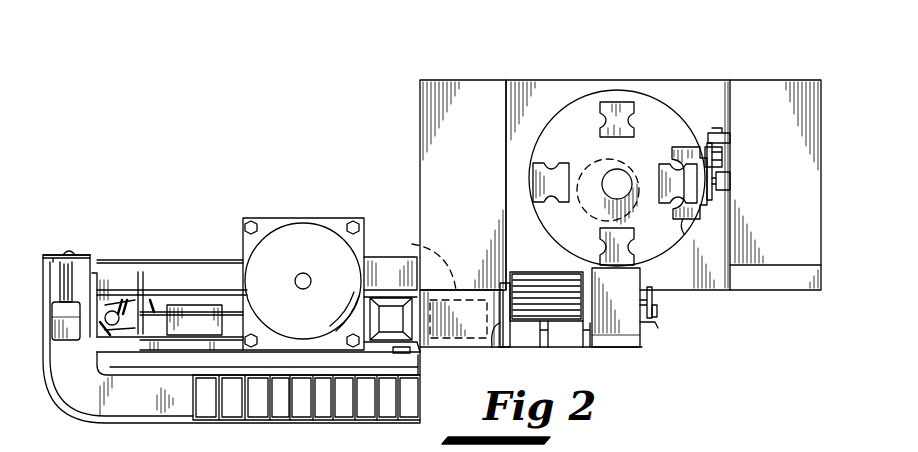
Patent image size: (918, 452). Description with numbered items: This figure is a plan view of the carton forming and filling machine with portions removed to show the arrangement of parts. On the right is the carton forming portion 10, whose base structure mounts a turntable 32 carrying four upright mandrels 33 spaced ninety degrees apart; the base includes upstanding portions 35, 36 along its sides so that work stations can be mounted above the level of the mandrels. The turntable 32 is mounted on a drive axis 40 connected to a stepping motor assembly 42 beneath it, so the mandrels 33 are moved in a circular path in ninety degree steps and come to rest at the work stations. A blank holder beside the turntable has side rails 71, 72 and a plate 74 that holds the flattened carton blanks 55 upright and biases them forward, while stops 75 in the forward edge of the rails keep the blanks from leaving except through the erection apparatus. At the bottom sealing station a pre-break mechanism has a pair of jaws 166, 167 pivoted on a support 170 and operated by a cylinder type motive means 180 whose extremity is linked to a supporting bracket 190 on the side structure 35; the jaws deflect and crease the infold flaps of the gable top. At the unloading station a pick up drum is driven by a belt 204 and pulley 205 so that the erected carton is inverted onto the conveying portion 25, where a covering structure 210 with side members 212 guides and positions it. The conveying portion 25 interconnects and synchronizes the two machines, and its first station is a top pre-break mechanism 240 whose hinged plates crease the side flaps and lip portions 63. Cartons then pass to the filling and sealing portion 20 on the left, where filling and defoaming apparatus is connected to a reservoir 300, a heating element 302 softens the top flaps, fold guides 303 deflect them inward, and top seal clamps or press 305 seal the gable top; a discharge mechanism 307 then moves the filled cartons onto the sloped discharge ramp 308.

The carton forming portion 10 is at (606, 72).
The carton filling and sealing portion 20 is at (165, 181).
The conveying portion 25 is at (464, 347).
The turntable 32 is at (660, 102).
The mandrels 33 is at (628, 102).
The upstanding portion 35 is at (781, 91).
The upstanding portion 36 is at (472, 95).
The drive axis 40 is at (631, 165).
The stepping motor assembly 42 is at (608, 198).
The carton blank 55 is at (543, 272).
The lip portions 63 is at (270, 451).
The side rail 71 is at (586, 347).
The side rail 72 is at (494, 340).
The plate 74 is at (546, 347).
The stops 75 is at (502, 276).
The jaw 166 is at (672, 150).
The jaw 167 is at (684, 230).
The support 170 is at (727, 180).
The motive means 180 is at (722, 156).
The supporting shaft or bracket 190 is at (723, 136).
The belt 204 is at (655, 296).
The pulley 205 is at (658, 312).
The covering structure 210 is at (625, 330).
The side members 212 is at (656, 326).
The top pre-break mechanism 240 is at (436, 289).
The reservoir 300 is at (308, 228).
The heating element 302 is at (232, 319).
The fold guides 303 is at (146, 318).
The top seal clamps or press 305 is at (130, 290).
The discharge mechanism 307 is at (53, 255).
The discharge ramp 308 is at (80, 418).